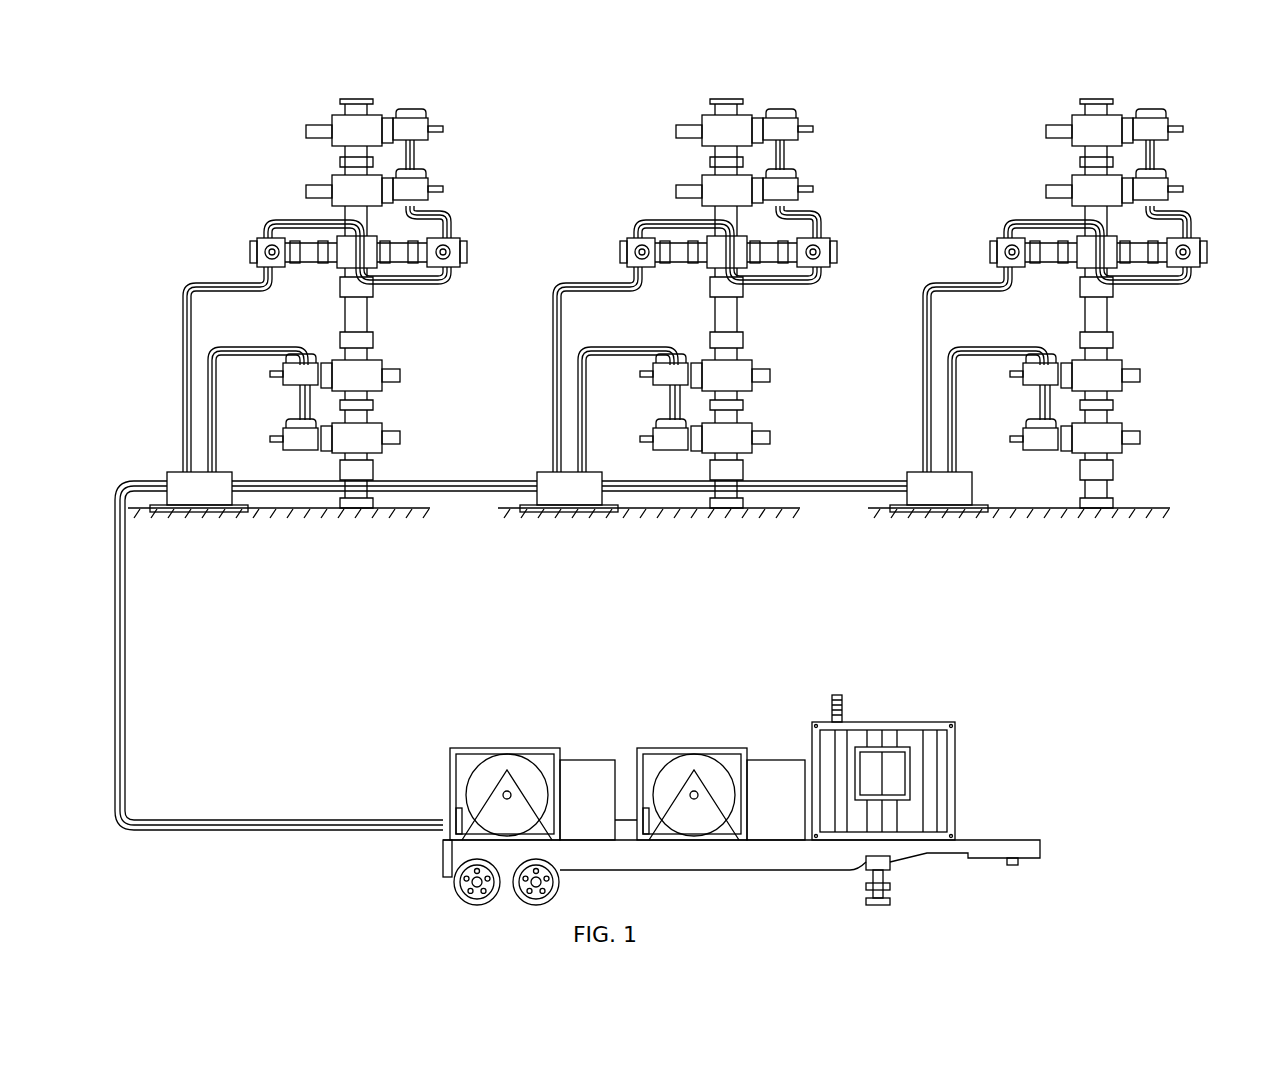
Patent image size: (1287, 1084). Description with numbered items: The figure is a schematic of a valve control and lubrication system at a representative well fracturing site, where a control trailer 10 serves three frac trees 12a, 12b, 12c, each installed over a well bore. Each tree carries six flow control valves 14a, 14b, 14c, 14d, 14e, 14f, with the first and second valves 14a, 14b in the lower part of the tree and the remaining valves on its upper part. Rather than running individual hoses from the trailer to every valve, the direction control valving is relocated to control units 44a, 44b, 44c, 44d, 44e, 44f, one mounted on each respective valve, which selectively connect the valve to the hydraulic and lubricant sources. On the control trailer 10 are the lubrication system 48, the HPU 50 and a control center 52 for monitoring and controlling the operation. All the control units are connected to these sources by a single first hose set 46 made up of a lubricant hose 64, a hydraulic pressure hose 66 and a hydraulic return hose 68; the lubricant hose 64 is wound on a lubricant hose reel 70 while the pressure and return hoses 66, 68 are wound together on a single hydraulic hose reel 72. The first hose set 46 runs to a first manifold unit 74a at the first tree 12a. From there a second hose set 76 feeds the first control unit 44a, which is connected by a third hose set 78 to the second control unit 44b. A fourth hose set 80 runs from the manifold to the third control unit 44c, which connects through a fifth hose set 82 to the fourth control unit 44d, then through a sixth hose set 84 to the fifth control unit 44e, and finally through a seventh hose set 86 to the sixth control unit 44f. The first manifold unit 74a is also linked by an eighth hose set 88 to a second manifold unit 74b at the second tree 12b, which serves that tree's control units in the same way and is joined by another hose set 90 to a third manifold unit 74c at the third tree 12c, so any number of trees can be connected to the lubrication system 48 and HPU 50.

The control trailer 10 is at (1027, 721).
The first frac tree 12a is at (251, 108).
The second frac tree 12b is at (649, 285).
The third frac tree 12c is at (1019, 285).
The first valve 14a is at (388, 372).
The second valve 14b is at (388, 434).
The third valve 14c is at (282, 270).
The fourth valve 14d is at (440, 277).
The fifth valve 14e is at (332, 188).
The sixth valve 14f is at (340, 118).
The first control unit 44a is at (288, 378).
The second control unit 44b is at (288, 442).
The third control unit 44c is at (256, 248).
The fourth control unit 44d is at (462, 252).
The fifth control unit 44e is at (430, 188).
The sixth control unit 44f is at (428, 122).
The first hose set 46 is at (279, 693).
The lubrication system 48 is at (760, 812).
The HPU 50 is at (573, 812).
The control center 52 is at (896, 722).
The lubricant hose 64 is at (318, 817).
The hydraulic pressure hose 66 is at (300, 828).
The hydraulic return hose 68 is at (358, 833).
The lubricant hose reel 70 is at (702, 766).
The hydraulic hose reel 72 is at (512, 766).
The first manifold unit 74a is at (207, 497).
The second manifold unit 74b is at (569, 517).
The third manifold unit 74c is at (939, 517).
The second hose set 76 is at (262, 346).
The third hose set 78 is at (298, 405).
The fourth hose set 80 is at (182, 332).
The fifth hose set 82 is at (263, 232).
The sixth hose set 84 is at (450, 226).
The seventh hose set 86 is at (418, 160).
The eighth hose set 88 is at (473, 494).
The hose set 90 is at (840, 494).